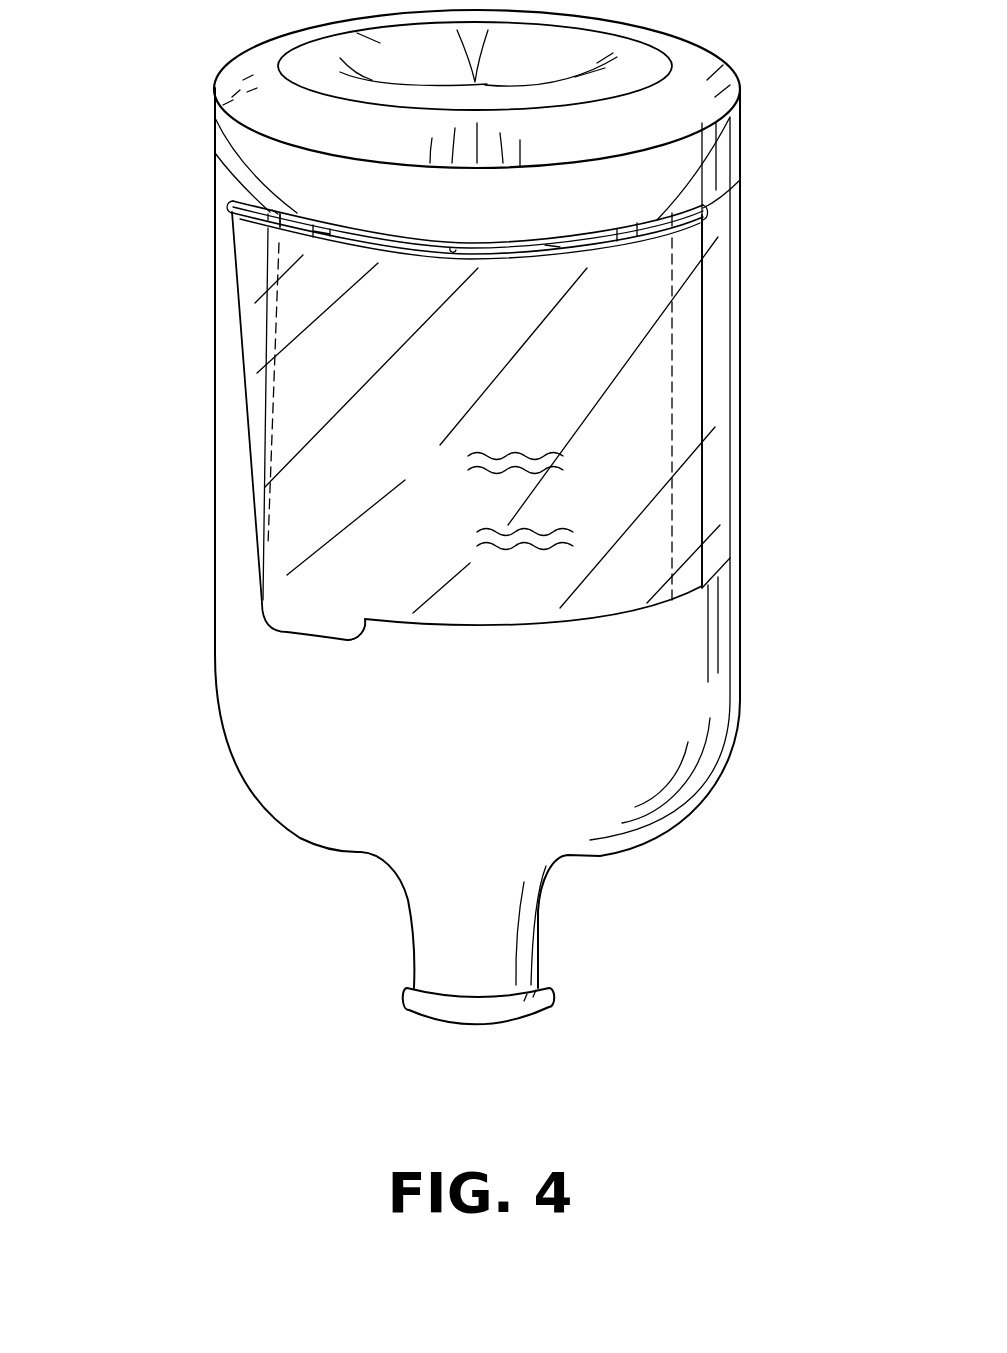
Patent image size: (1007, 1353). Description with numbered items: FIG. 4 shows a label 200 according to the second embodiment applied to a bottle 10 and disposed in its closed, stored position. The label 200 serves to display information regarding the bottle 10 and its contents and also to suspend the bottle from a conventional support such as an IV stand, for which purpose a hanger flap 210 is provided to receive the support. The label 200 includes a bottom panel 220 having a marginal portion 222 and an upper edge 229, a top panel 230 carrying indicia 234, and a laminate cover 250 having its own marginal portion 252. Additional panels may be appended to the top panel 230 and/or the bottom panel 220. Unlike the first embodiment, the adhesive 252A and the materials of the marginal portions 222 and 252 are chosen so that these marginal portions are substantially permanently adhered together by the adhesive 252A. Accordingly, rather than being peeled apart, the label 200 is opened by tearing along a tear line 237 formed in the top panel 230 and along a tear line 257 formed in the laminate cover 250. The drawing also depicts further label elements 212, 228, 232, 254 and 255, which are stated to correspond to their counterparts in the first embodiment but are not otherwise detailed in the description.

The bottle 10 is at (500, 853).
The label 200 is at (778, 597).
The hanger flap 210 is at (613, 230).
The label element corresponding to element 112 212 is at (293, 217).
The bottom panel 220 is at (390, 242).
The marginal portion 222 is at (276, 213).
The label element corresponding to element 128 228 is at (697, 206).
The upper edge 229 is at (455, 250).
The top panel 230 is at (555, 246).
The label element corresponding to element 132 232 is at (318, 628).
The indicia 234 is at (422, 383).
The tear line 237 is at (268, 218).
The laminate cover 250 is at (527, 557).
The marginal portion 252 is at (253, 288).
The adhesive 252A is at (232, 201).
The label element corresponding to element 154 254 is at (713, 293).
The label element corresponding to element 155 255 is at (673, 395).
The tear line 257 is at (266, 433).